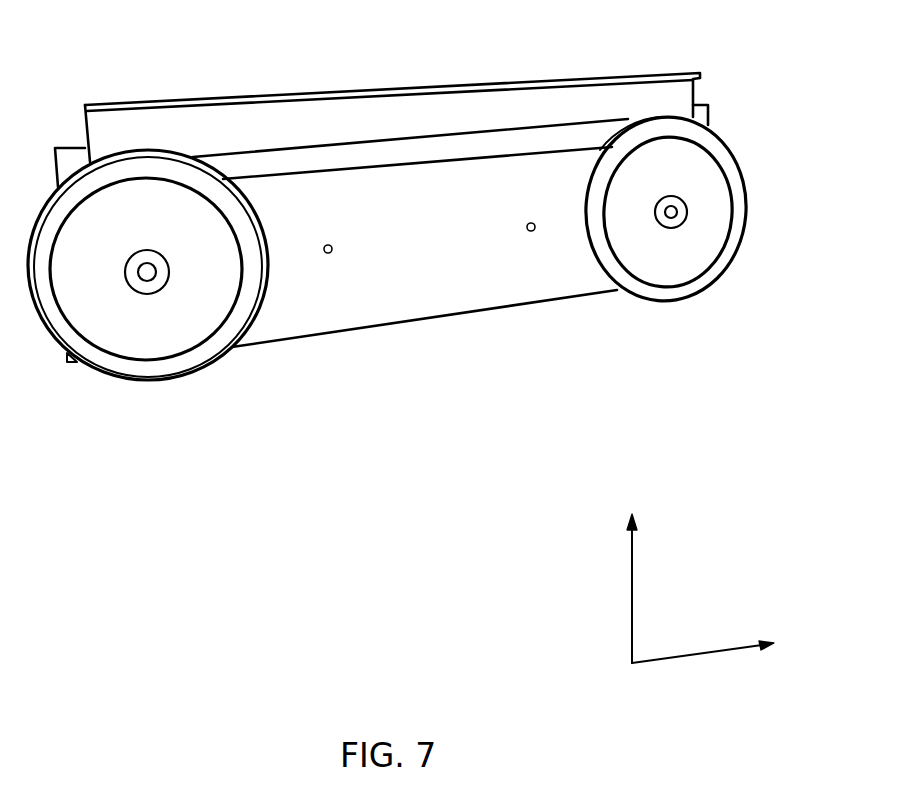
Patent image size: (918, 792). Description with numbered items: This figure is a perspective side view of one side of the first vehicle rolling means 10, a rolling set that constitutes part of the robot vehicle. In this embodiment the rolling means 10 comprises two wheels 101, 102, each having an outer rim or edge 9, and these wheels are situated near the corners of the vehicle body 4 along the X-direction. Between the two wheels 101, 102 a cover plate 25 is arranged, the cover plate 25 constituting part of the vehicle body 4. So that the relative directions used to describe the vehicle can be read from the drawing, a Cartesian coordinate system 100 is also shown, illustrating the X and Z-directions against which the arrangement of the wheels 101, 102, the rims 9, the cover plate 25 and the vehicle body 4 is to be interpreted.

The vehicle body 4 is at (440, 113).
The outer rims 9 is at (722, 146).
The first vehicle rolling means 10 is at (758, 206).
The cover plate 25 is at (415, 247).
The Cartesian coordinate system 100 is at (585, 561).
The wheel 101 is at (687, 250).
The wheel 102 is at (120, 337).